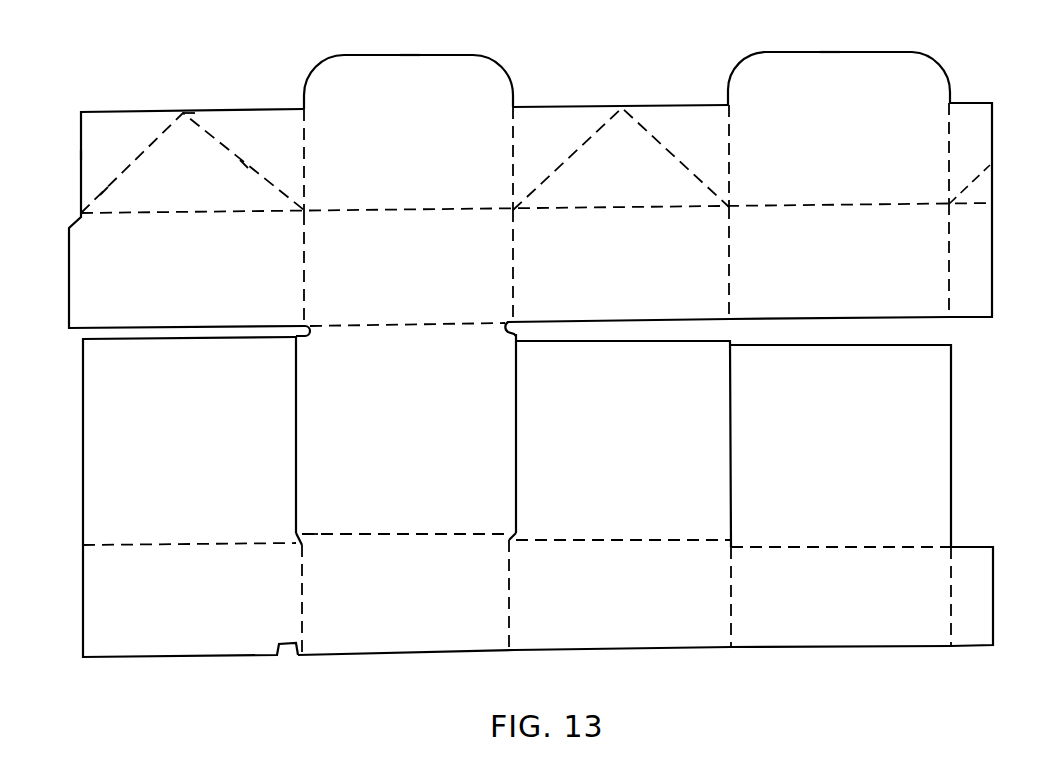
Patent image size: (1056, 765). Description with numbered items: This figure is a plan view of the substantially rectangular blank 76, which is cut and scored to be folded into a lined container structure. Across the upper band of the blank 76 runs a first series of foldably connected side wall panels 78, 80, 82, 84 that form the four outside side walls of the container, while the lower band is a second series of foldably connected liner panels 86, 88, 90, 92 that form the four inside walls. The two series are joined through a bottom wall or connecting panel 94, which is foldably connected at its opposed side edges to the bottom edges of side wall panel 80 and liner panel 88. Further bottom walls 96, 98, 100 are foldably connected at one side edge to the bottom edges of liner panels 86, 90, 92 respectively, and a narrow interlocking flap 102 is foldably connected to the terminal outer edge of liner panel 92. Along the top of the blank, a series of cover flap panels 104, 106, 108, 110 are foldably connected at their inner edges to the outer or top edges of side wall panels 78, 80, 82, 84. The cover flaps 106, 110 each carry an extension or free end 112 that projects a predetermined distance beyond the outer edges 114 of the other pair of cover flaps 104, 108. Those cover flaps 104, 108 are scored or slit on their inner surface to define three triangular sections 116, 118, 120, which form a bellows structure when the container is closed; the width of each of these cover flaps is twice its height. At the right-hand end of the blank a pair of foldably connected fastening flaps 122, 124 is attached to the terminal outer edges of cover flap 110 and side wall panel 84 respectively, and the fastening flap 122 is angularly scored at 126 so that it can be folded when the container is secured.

The blank 76 is at (176, 85).
The side wall panel 78 is at (176, 290).
The side wall panel 80 is at (394, 290).
The side wall panel 82 is at (603, 288).
The side wall panel 84 is at (821, 285).
The liner panel 86 is at (168, 611).
The liner panel 88 is at (386, 605).
The liner panel 90 is at (603, 611).
The liner panel 92 is at (831, 600).
The bottom wall 94 is at (390, 443).
The bottom wall 96 is at (168, 443).
The bottom wall 98 is at (607, 435).
The bottom wall 100 is at (823, 433).
The interlocking flap 102 is at (970, 592).
The cover flap 104 is at (174, 191).
The cover flap 106 is at (389, 184).
The cover flap 108 is at (598, 191).
The cover flap 110 is at (817, 166).
The extension 112 is at (367, 74).
The outer edge 114 is at (593, 62).
The triangular section 116 is at (97, 146).
The triangular section 118 is at (113, 198).
The triangular section 120 is at (253, 145).
The fastening flap 122 is at (983, 133).
The fastening flap 124 is at (965, 277).
The angular score 126 is at (968, 190).